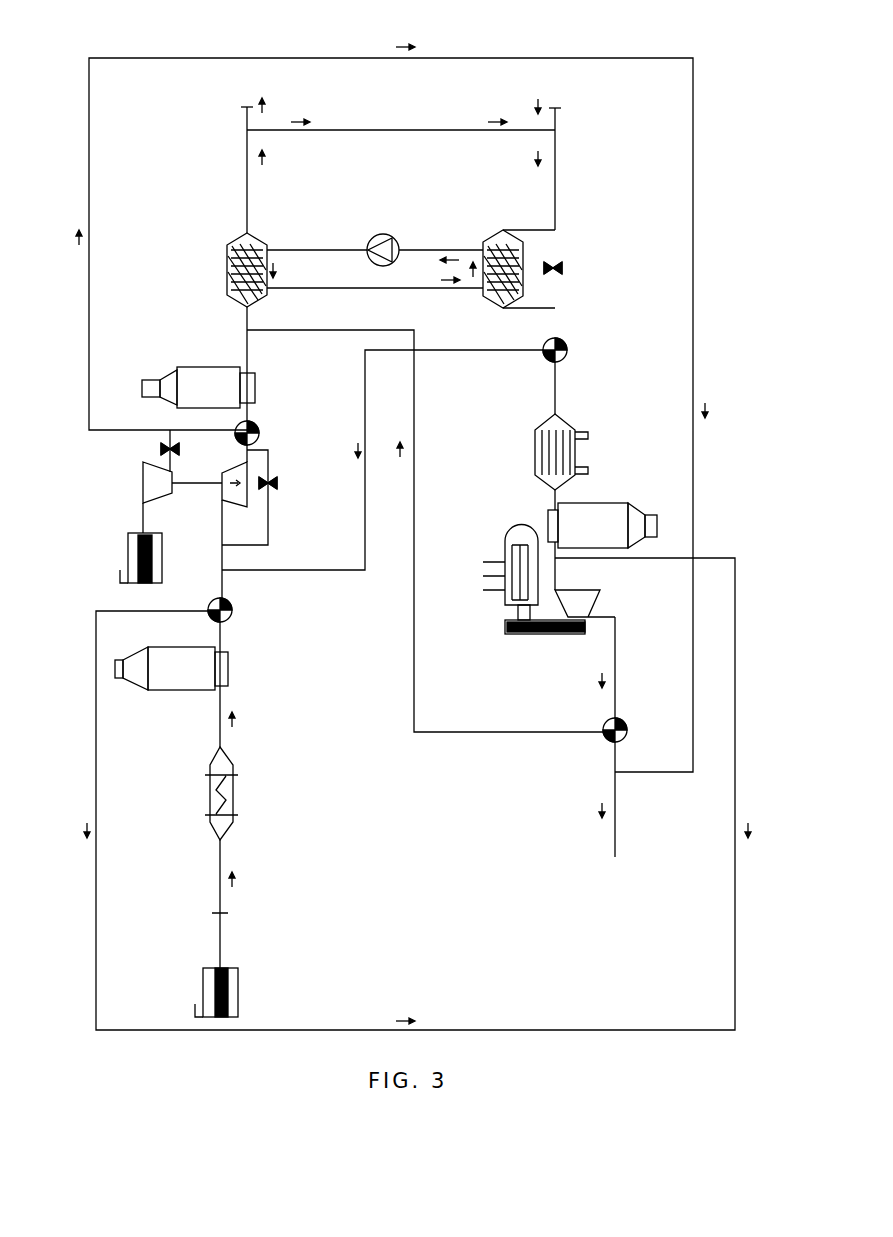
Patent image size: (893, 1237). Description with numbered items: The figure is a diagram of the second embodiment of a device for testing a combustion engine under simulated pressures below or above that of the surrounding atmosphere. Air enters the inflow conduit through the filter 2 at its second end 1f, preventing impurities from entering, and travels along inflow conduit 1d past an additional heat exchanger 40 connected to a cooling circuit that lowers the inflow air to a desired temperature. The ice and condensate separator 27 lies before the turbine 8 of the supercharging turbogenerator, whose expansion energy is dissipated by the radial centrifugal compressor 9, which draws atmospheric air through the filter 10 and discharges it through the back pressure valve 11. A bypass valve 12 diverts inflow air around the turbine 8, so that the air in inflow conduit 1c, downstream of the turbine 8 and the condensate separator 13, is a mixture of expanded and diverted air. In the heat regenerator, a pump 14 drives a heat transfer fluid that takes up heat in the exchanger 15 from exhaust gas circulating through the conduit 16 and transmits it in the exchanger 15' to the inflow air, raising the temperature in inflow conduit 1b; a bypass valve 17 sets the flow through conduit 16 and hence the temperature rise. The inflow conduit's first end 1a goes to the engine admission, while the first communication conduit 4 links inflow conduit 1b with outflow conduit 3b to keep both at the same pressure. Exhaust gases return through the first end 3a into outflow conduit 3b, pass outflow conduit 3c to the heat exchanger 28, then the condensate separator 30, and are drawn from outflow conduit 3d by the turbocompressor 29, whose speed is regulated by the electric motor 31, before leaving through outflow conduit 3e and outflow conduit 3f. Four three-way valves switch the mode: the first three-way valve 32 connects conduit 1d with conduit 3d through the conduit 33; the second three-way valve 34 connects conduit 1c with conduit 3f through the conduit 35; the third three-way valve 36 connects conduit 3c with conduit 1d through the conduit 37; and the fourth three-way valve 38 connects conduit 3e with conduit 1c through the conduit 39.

The filter 2 is at (203, 972).
The first communication conduit 4 is at (344, 130).
The turbine 8 is at (237, 470).
The radial centrifugal compressor 9 is at (143, 488).
The filter 10 is at (128, 560).
The back pressure valve 11 is at (160, 450).
The bypass valve 12 is at (280, 484).
The condensate separator 13 is at (160, 380).
The pump 14 is at (386, 234).
The exchanger 15 is at (487, 252).
The exchanger 15' is at (212, 270).
The conduit 16 is at (518, 230).
The bypass valve 17 is at (563, 268).
The ice and condensate separator 27 is at (176, 692).
The heat exchanger 28 is at (570, 428).
The turbocompressor 29 is at (601, 604).
The condensate separator 30 is at (600, 516).
The electric motor 31 is at (510, 536).
The first three-way valve 32 is at (234, 617).
The conduit 33 is at (494, 1030).
The second three-way valve 34 is at (260, 437).
The conduit 35 is at (98, 134).
The third three-way valve 36 is at (568, 352).
The conduit 37 is at (332, 572).
The fourth three-way valve 38 is at (604, 742).
The conduit 39 is at (411, 702).
The additional heat exchanger 40 is at (205, 806).
The first end of inflow conduit 1a is at (245, 118).
The inflow conduit section 1b is at (245, 168).
The inflow conduit section 1c is at (257, 352).
The inflow conduit section 1d is at (220, 726).
The second end of inflow conduit 1f is at (220, 884).
The first end of outflow conduit 3a is at (557, 122).
The outflow conduit section 3b is at (557, 178).
The outflow conduit section 3c is at (557, 396).
The outflow conduit section 3d is at (560, 591).
The outflow conduit section 3e is at (620, 683).
The outflow conduit section 3f is at (628, 833).